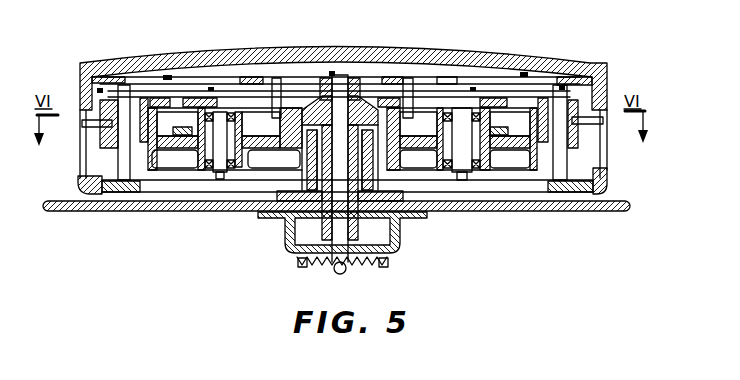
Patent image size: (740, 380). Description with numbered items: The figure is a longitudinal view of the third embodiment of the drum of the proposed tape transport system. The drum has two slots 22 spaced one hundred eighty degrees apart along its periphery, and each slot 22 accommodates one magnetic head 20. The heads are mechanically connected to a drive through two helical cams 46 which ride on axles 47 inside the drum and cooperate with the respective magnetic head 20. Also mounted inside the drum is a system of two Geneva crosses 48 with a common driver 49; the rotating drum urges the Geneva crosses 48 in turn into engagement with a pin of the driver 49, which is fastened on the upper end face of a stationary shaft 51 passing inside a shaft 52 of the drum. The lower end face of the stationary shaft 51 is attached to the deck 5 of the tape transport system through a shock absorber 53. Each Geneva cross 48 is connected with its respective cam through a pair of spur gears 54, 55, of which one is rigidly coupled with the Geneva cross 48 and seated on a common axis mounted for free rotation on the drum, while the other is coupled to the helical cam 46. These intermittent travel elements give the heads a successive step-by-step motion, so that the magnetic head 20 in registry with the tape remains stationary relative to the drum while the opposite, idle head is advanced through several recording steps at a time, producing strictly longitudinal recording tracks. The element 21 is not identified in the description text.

The deck 5 is at (200, 207).
The magnetic head 20 is at (82, 130).
The housing bottom 21 is at (108, 182).
The slot 22 is at (83, 152).
The helical cam 46 is at (152, 173).
The axle 47 is at (194, 148).
The Geneva cross 48 is at (250, 80).
The driver 49 is at (354, 75).
The stationary shaft 51 is at (341, 228).
The shaft of the drum 52 is at (287, 233).
The shock absorber 53 is at (363, 261).
The spur gear 54 is at (192, 127).
The spur gear 55 is at (291, 100).